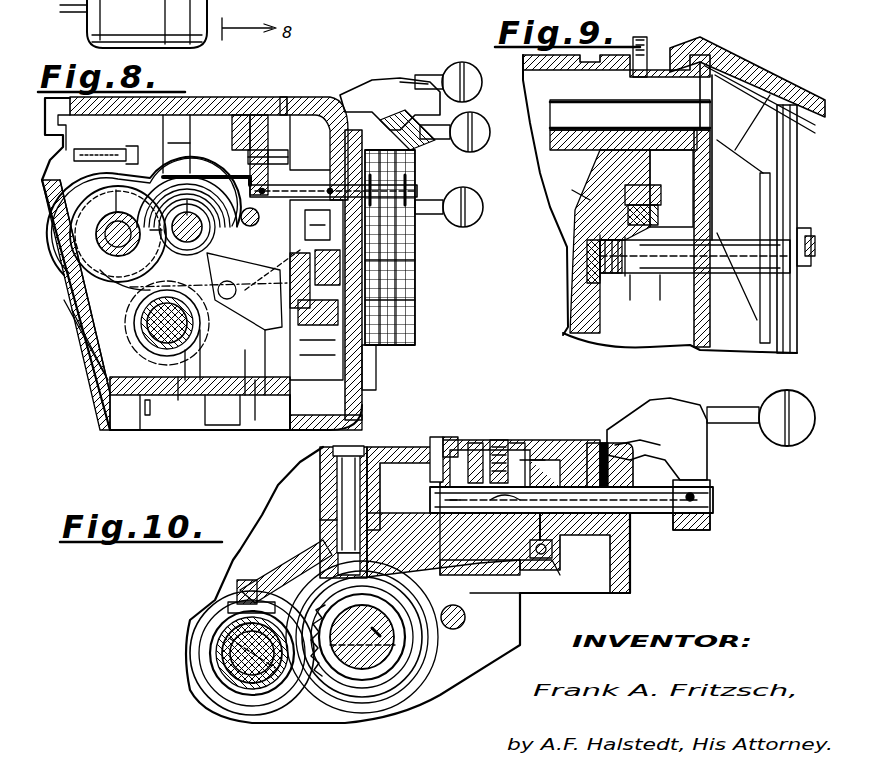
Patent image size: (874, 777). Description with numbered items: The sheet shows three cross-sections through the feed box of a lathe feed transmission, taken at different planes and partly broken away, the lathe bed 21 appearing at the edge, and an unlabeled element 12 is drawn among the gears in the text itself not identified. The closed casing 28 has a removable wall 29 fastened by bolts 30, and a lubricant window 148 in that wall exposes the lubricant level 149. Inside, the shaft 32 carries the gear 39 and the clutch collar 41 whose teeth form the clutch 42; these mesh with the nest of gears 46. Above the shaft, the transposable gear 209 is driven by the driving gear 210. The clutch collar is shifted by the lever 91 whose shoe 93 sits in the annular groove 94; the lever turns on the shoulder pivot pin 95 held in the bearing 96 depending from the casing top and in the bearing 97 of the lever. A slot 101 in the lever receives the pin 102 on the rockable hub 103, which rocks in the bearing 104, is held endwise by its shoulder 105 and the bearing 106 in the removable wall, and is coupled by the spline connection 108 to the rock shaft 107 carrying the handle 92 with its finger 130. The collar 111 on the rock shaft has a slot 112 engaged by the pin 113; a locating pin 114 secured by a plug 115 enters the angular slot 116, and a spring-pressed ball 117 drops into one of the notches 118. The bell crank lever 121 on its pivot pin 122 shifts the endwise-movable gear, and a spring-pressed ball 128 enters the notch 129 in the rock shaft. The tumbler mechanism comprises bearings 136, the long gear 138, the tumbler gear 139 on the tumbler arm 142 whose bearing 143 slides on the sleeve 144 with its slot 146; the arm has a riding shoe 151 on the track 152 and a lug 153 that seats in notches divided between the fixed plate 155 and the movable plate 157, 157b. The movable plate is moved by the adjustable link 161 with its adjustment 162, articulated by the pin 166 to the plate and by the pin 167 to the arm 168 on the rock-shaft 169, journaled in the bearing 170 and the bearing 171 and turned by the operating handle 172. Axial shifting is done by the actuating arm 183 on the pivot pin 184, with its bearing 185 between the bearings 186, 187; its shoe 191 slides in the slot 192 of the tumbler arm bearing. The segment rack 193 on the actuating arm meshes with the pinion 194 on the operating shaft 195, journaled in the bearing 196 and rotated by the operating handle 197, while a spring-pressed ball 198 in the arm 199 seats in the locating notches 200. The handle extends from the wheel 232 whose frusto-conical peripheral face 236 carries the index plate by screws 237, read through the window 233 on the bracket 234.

In FIG. 8, the gear 12 is at (116, 195).
In FIG. 8, the bed 21 is at (95, 396).
In FIG. 8, the casing 28 is at (140, 432).
In FIG. 9, the casing 28 is at (550, 215).
In FIG. 10, the casing 28 is at (233, 552).
In FIG. 8, the removable wall 29 is at (365, 348).
In FIG. 9, the removable wall 29 is at (675, 352).
In FIG. 10, the removable wall 29 is at (615, 596).
In FIG. 8, the bolts 30 is at (455, 5).
In FIG. 8, the shaft 32 is at (150, 220).
In FIG. 10, the shaft 32 is at (240, 660).
In FIG. 8, the gear 39 is at (85, 330).
In FIG. 10, the clutch collar 41 is at (304, 690).
In FIG. 10, the clutch 42 is at (384, 636).
In FIG. 8, the nest of gears 46 is at (228, 281).
In FIG. 10, the nest of gears 46 is at (365, 700).
In FIG. 8, the lever 91 is at (200, 172).
In FIG. 10, the lever 91 is at (462, 578).
In FIG. 8, the handle 92 is at (425, 78).
In FIG. 10, the handle 92 is at (775, 440).
In FIG. 10, the shoe 93 is at (237, 598).
In FIG. 10, the annular groove 94 is at (236, 700).
In FIG. 10, the shoulder pivot pin 95 is at (322, 470).
In FIG. 10, the bearing 96 is at (322, 455).
In FIG. 10, the bearing 97 is at (322, 532).
In FIG. 10, the slot 101 is at (555, 575).
In FIG. 10, the pin 102 is at (553, 555).
In FIG. 10, the rockable hub 103 is at (548, 540).
In FIG. 10, the bearing 104 is at (525, 595).
In FIG. 10, the shoulder 105 is at (530, 460).
In FIG. 10, the bearing 106 is at (630, 530).
In FIG. 10, the rock shaft 107 is at (712, 500).
In FIG. 10, the spline connection 108 is at (548, 440).
In FIG. 8, the collar 111 is at (230, 112).
In FIG. 10, the collar 111 is at (446, 575).
In FIG. 10, the slot 112 is at (436, 437).
In FIG. 10, the pin 113 is at (445, 437).
In FIG. 10, the locating pin 114 is at (518, 443).
In FIG. 10, the plug 115 is at (498, 440).
In FIG. 10, the angular slot 116 is at (504, 500).
In FIG. 10, the spring-pressed ball 117 is at (474, 443).
In FIG. 10, the notches 118 is at (455, 500).
In FIG. 10, the bell crank lever 121 is at (300, 552).
In FIG. 10, the pivot pin 122 is at (405, 447).
In FIG. 10, the spring-pressed ball 128 is at (595, 450).
In FIG. 10, the notch 129 is at (571, 500).
In FIG. 10, the finger 130 is at (657, 439).
In FIG. 8, the bearings 136 is at (178, 400).
In FIG. 8, the long gear 138 is at (185, 400).
In FIG. 8, the tumbler gear 139 is at (185, 318).
In FIG. 8, the tumbler arm 142 is at (245, 400).
In FIG. 8, the bearing 143 is at (100, 370).
In FIG. 8, the sleeve 144 is at (105, 385).
In FIG. 8, the slot 146 is at (100, 270).
In FIG. 8, the lubricant window 148 is at (376, 370).
In FIG. 8, the level 149 is at (255, 420).
In FIG. 8, the riding shoe 151 is at (270, 305).
In FIG. 8, the track 152 is at (265, 400).
In FIG. 8, the lug 153 is at (325, 345).
In FIG. 8, the plate 155 is at (405, 275).
In FIG. 8, the movable plate 157 is at (412, 300).
In FIG. 8, the movable plate 157b is at (405, 5).
In FIG. 8, the adjustable link 161 is at (410, 290).
In FIG. 8, the adjustment 162 is at (405, 240).
In FIG. 8, the pin 166 is at (415, 335).
In FIG. 8, the pin 167 is at (305, 105).
In FIG. 8, the arm 168 is at (262, 120).
In FIG. 8, the rock-shaft 169 is at (268, 152).
In FIG. 8, the bearing 170 is at (240, 120).
In FIG. 8, the bearing 171 is at (412, 186).
In FIG. 8, the operating handle 172 is at (430, 142).
In FIG. 9, the actuating arm 183 is at (600, 305).
In FIG. 9, the pivot pin 184 is at (702, 100).
In FIG. 9, the bearing 185 is at (610, 108).
In FIG. 9, the bearing 186 is at (566, 152).
In FIG. 9, the bearing 187 is at (700, 140).
In FIG. 8, the shoe 191 is at (200, 403).
In FIG. 8, the slot 192 is at (200, 395).
In FIG. 9, the segment rack 193 is at (600, 240).
In FIG. 9, the pinion 194 is at (645, 275).
In FIG. 9, the operating shaft 195 is at (690, 300).
In FIG. 9, the bearing 196 is at (667, 330).
In FIG. 8, the operating handle 197 is at (490, 162).
In FIG. 9, the operating handle 197 is at (805, 228).
In FIG. 9, the spring-pressed ball 198 is at (645, 210).
In FIG. 9, the arm 199 is at (648, 170).
In FIG. 9, the locating notches 200 is at (590, 195).
In FIG. 8, the transposable gear 209 is at (61, 7).
In FIG. 8, the driving gear 210 is at (147, 24).
In FIG. 8, the wheel 232 is at (412, 320).
In FIG. 9, the wheel 232 is at (735, 355).
In FIG. 9, the window 233 is at (790, 92).
In FIG. 9, the bracket 234 is at (680, 50).
In FIG. 9, the frusto-conical peripheral face 236 is at (775, 100).
In FIG. 8, the screws 237 is at (400, 258).